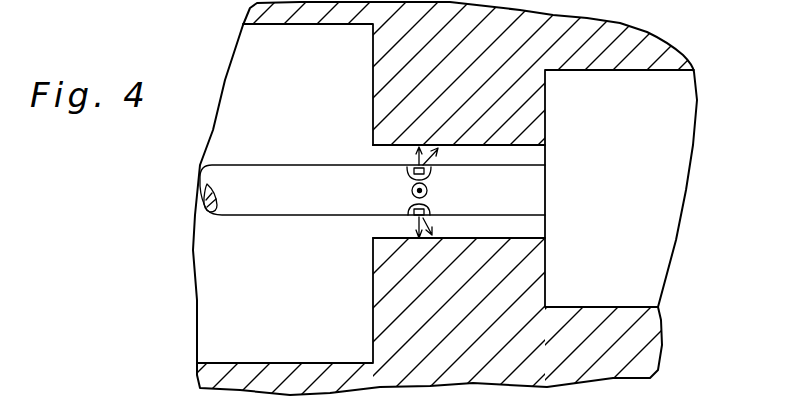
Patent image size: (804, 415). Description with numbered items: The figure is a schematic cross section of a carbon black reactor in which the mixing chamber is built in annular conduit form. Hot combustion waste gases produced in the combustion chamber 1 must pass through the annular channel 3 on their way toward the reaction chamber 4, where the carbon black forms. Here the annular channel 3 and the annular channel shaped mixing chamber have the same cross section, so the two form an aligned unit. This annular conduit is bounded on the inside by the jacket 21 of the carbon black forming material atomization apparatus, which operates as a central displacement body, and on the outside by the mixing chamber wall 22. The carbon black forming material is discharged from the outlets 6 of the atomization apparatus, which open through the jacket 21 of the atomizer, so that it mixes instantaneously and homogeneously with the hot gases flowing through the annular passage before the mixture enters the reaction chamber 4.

The combustion chamber 1 is at (287, 89).
The annular channel 3 is at (390, 154).
The reaction chamber 4 is at (672, 197).
The outlets 6 is at (428, 164).
The jacket 21 is at (518, 219).
The mixing chamber wall 22 is at (524, 146).